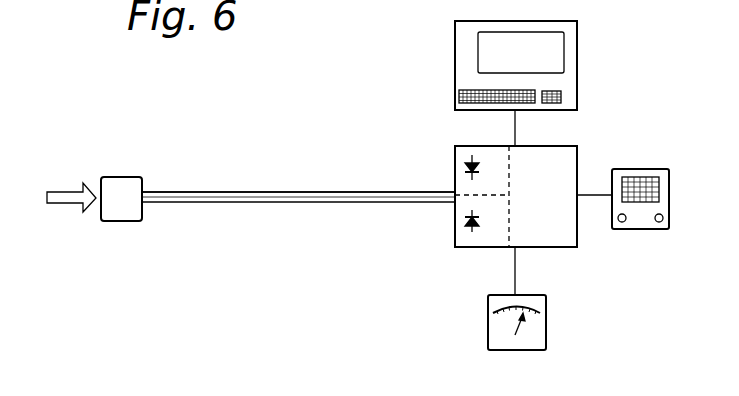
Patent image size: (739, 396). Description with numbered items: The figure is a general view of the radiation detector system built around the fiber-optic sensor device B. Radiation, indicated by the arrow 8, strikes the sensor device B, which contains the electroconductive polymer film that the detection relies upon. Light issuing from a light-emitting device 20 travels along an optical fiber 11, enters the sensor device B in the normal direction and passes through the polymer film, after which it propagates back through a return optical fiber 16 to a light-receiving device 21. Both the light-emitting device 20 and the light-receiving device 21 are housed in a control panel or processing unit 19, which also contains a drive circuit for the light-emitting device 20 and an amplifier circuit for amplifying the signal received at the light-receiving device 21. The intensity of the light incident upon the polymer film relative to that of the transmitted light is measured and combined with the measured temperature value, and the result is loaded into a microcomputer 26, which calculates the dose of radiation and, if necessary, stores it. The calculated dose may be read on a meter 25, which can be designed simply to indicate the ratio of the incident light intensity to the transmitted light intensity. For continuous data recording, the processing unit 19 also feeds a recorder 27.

The incident light / input signal 8 is at (69, 205).
The sensor device B is at (122, 177).
The optical fiber 11 is at (310, 190).
The return optical fiber 16 is at (287, 203).
The control panel or processing unit 19 is at (463, 247).
The light-emitting device 20 is at (465, 168).
The light-receiving device 21 is at (465, 223).
The meter 25 is at (500, 335).
The microcomputer 26 is at (455, 64).
The recorder 27 is at (641, 169).